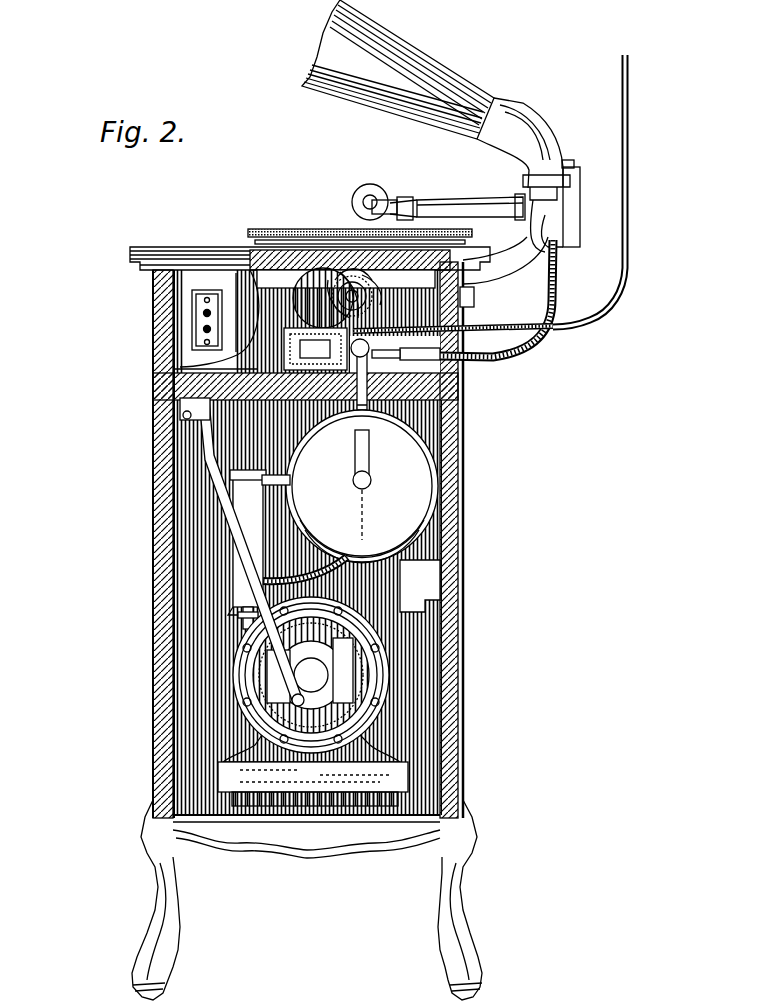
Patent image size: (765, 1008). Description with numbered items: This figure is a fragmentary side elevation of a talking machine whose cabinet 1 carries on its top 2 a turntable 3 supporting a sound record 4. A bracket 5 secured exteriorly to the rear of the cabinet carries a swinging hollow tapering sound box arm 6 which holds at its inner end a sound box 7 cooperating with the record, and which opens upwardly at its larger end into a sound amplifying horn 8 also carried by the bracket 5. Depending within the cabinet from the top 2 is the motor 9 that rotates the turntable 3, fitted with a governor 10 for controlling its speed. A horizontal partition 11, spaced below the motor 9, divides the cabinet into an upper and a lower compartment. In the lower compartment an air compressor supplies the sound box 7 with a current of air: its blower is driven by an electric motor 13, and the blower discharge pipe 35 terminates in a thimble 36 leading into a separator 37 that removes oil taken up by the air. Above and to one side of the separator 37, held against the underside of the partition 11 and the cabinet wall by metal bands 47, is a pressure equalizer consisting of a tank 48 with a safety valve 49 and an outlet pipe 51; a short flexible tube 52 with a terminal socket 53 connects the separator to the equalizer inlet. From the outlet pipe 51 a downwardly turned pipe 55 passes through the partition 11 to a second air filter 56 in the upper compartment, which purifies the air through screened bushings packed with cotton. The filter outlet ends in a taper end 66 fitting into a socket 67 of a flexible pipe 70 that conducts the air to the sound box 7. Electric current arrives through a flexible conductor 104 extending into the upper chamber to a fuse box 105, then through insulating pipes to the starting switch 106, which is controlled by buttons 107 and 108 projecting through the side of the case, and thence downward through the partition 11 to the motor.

The cabinet 1 is at (465, 532).
The top 2 is at (126, 257).
The turntable 3 is at (250, 233).
The sound record 4 is at (275, 228).
The bracket 5 is at (582, 216).
The sound box arm 6 is at (480, 200).
The sound box 7 is at (370, 186).
The sound amplifying horn 8 is at (332, 63).
The motor 9 is at (304, 272).
The governor 10 is at (344, 277).
The horizontal partition 11 is at (448, 389).
The electric motor 13 is at (338, 632).
The discharge pipe 35 is at (240, 626).
The thimble 36 is at (230, 612).
The separator 37 is at (262, 540).
The metal bands 47 is at (420, 563).
The tank 48 is at (362, 486).
The safety valve 49 is at (283, 480).
The outlet pipe 51 is at (372, 472).
The flexible tube 52 is at (340, 580).
The terminal socket 53 is at (341, 339).
The downwardly turned pipe 55 is at (415, 402).
The air filter 56 is at (463, 383).
The taper end 66 is at (463, 372).
The socket 67 is at (463, 365).
The flexible pipe 70 is at (528, 332).
The flexible conductor 104 is at (615, 298).
The fuse box 105 is at (280, 337).
The starting switch 106 is at (196, 298).
The button 107 is at (200, 313).
The button 108 is at (203, 329).